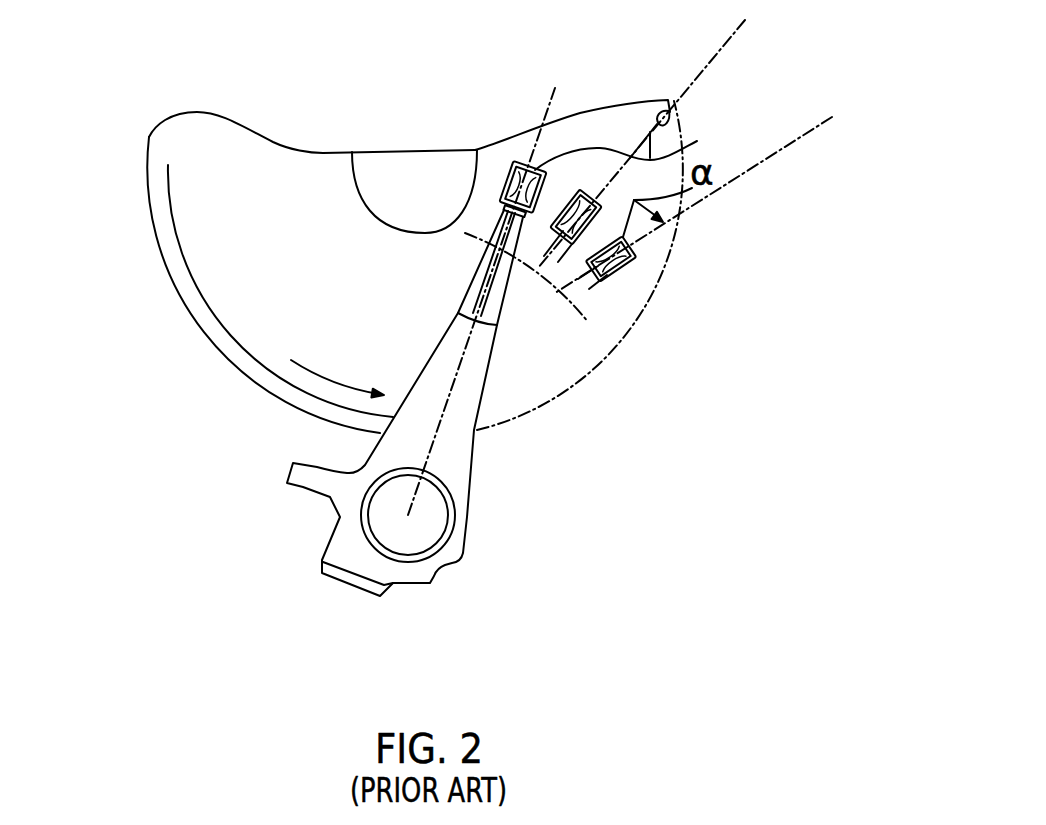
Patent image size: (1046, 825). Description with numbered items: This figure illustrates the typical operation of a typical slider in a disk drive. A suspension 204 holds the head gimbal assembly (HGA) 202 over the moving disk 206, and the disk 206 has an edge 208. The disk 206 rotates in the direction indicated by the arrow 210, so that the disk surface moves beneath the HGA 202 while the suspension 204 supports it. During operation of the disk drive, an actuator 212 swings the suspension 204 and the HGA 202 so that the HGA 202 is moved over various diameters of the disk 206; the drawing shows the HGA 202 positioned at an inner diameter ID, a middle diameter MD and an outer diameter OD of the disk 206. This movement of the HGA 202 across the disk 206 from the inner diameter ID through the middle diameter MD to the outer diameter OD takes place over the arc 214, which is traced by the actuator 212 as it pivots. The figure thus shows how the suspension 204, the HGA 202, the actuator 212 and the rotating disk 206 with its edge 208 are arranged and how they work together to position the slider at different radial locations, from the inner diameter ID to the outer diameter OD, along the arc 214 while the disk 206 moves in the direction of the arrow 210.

The head gimbal assembly 202 is at (536, 164).
The suspension 204 is at (502, 300).
The disk 206 is at (290, 249).
The edge 208 is at (224, 363).
The arrow 210 is at (347, 385).
The actuator 212 is at (469, 526).
The arc 214 is at (586, 303).
The inner diameter ID is at (511, 165).
The middle diameter MD is at (602, 207).
The outer diameter OD is at (635, 257).